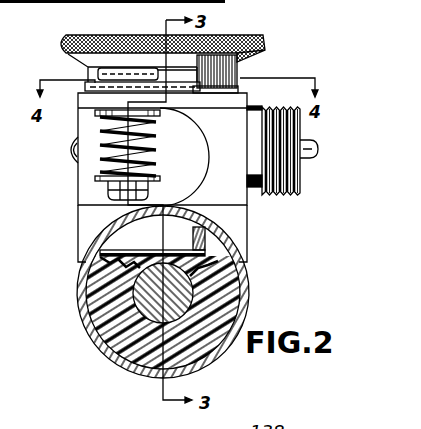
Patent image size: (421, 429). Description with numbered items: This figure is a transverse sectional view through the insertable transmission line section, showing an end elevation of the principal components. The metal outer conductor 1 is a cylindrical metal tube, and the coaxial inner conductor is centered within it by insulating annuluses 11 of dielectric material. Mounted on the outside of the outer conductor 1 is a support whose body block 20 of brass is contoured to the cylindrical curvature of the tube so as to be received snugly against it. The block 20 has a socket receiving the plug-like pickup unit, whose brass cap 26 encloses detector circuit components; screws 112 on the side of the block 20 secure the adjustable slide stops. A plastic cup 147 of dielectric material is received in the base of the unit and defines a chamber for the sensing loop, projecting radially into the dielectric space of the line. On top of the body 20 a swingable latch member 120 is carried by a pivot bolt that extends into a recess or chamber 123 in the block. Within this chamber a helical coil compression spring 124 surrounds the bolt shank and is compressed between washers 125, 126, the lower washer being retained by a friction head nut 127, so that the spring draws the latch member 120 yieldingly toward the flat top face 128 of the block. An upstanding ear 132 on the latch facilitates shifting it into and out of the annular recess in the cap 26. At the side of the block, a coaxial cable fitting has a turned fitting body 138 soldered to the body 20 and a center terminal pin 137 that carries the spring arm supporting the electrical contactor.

The metal outer conductor 1 is at (246, 287).
The insulating annuluses 11 is at (242, 277).
The body block 20 is at (240, 228).
The cap 26 is at (265, 44).
The screws 112 is at (78, 163).
The latch member 120 is at (95, 77).
The recess or chamber 123 is at (200, 157).
The helical coil compression spring 124 is at (100, 166).
The washer 125 is at (100, 113).
The washer 126 is at (110, 187).
The friction head nut 127 is at (110, 207).
The flat top face 128 is at (176, 89).
The upstanding ear 132 is at (243, 72).
The center terminal pin 137 is at (316, 154).
The fitting body 138 is at (300, 187).
The plastic cup 147 is at (172, 238).